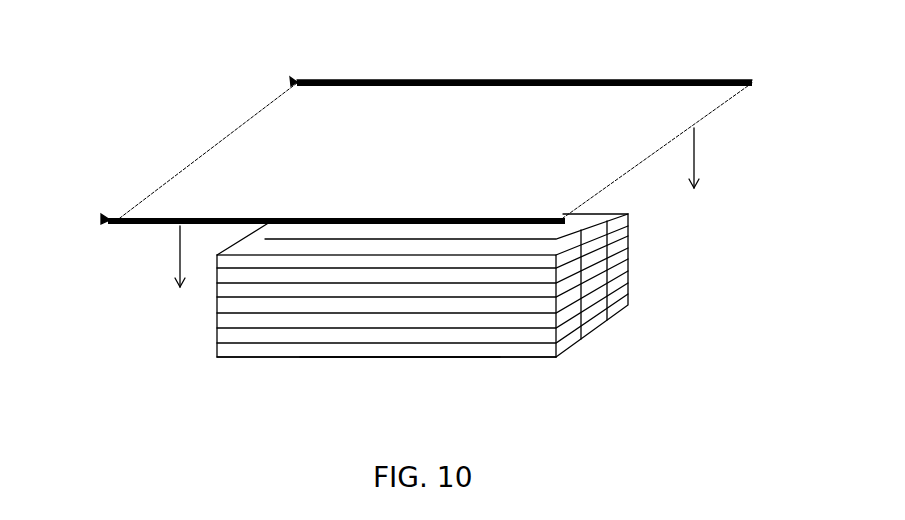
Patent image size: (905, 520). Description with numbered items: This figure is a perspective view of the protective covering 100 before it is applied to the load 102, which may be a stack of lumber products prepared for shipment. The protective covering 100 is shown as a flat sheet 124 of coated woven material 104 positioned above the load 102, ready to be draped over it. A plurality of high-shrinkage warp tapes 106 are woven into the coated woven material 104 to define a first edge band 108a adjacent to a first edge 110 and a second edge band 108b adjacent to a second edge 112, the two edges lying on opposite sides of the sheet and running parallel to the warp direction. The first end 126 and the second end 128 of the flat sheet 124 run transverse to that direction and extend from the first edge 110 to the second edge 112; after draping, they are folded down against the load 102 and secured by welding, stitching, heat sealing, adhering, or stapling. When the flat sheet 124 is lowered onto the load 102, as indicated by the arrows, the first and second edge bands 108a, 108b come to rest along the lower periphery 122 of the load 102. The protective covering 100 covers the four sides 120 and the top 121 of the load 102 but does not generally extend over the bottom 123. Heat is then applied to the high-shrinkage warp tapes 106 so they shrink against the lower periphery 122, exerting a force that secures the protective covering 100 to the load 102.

The protective covering 100 is at (162, 69).
The load 102 is at (577, 373).
The coated woven material 104 is at (651, 95).
The high-shrinkage warp tapes 106 is at (547, 82).
The first edge band 108a is at (297, 82).
The second edge band 108b is at (110, 220).
The first edge 110 is at (150, 227).
The second edge 112 is at (373, 82).
The four sides 120 is at (216, 318).
The top 121 is at (575, 231).
The lower periphery 122 is at (487, 353).
The bottom 123 is at (405, 361).
The flat sheet 124 is at (722, 128).
The first end 126 is at (205, 150).
The second end 128 is at (722, 103).